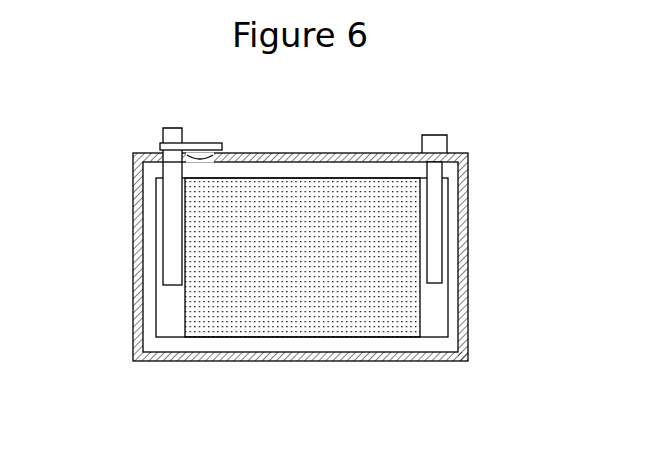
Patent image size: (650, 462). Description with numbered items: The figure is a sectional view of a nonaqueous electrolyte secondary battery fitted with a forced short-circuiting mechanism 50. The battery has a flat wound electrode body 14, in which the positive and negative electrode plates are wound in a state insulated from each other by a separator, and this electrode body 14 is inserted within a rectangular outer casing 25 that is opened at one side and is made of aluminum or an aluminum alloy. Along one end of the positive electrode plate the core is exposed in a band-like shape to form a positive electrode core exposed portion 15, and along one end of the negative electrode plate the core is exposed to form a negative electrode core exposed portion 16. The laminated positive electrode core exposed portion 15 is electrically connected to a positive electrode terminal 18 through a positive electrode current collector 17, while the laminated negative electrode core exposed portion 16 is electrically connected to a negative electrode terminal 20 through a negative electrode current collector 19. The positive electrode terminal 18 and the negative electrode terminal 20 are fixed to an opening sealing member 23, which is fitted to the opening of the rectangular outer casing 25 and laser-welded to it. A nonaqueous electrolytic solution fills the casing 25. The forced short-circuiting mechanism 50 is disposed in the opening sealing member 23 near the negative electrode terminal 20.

The flat wound electrode body 14 is at (257, 315).
The positive electrode core exposed portion 15 is at (435, 302).
The negative electrode core exposed portion 16 is at (172, 322).
The positive electrode current collector 17 is at (435, 192).
The positive electrode terminal 18 is at (447, 135).
The negative electrode current collector 19 is at (172, 215).
The negative electrode terminal 20 is at (173, 128).
The opening sealing member 23 is at (333, 153).
The rectangular outer casing 25 is at (138, 285).
The forced short-circuiting mechanism 50 is at (197, 137).